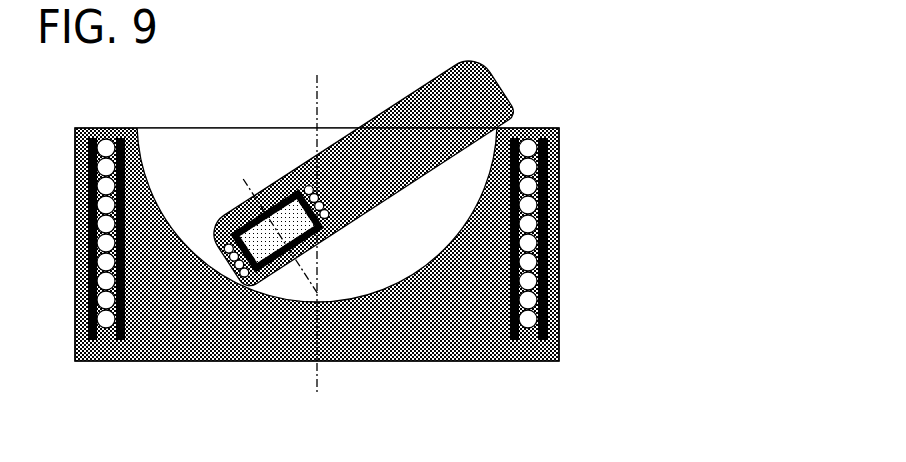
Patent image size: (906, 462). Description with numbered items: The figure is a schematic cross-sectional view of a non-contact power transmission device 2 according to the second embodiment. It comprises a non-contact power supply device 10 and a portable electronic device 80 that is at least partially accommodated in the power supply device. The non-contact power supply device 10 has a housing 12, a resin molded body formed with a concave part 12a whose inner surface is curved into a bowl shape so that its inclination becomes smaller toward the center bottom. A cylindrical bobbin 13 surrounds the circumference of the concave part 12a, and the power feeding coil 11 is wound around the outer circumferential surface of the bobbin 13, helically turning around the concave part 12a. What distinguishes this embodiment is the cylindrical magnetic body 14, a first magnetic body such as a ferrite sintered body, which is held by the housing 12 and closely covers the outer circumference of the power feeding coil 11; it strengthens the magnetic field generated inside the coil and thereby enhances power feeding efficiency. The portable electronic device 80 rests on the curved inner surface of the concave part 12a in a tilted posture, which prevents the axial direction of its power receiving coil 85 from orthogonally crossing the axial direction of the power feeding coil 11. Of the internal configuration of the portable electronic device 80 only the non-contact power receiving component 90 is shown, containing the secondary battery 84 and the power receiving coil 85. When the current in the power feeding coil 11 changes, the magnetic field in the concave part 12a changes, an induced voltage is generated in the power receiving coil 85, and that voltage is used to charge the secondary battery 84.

The non-contact power transmission device 2 is at (559, 403).
The non-contact power supply device 10 is at (574, 230).
The power feeding coil 11 is at (552, 277).
The housing 12 is at (560, 168).
The concave part 12a is at (148, 182).
The bobbin 13 is at (512, 345).
The cylindrical magnetic body 14 is at (552, 335).
The portable electronic device 80 is at (510, 91).
The secondary battery 84 is at (264, 288).
The power receiving coil 85 is at (240, 270).
The non-contact power receiving component 90 is at (242, 208).